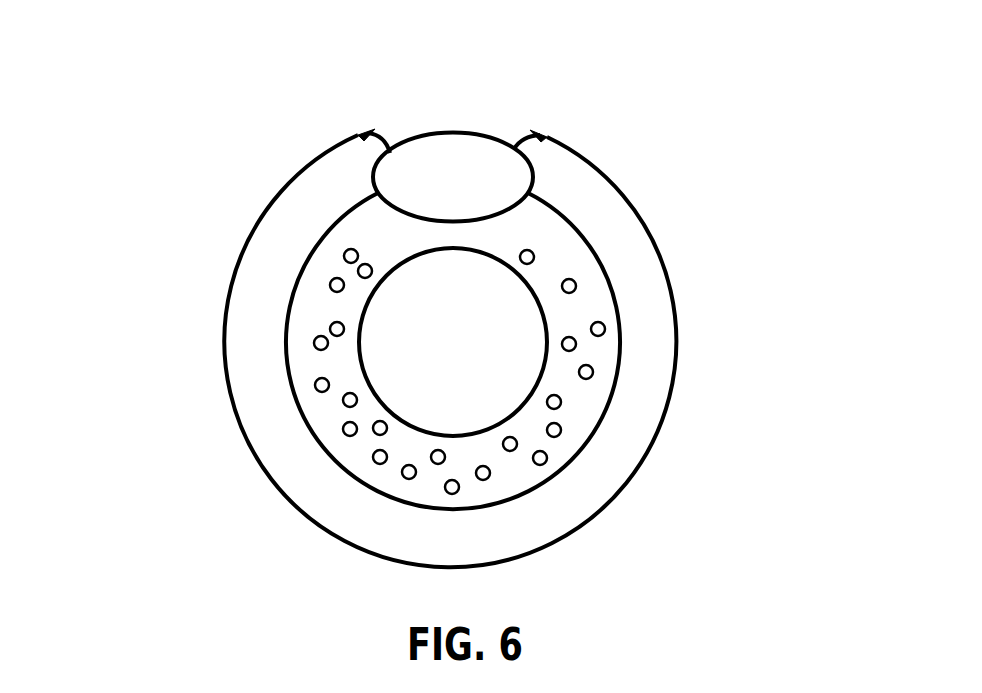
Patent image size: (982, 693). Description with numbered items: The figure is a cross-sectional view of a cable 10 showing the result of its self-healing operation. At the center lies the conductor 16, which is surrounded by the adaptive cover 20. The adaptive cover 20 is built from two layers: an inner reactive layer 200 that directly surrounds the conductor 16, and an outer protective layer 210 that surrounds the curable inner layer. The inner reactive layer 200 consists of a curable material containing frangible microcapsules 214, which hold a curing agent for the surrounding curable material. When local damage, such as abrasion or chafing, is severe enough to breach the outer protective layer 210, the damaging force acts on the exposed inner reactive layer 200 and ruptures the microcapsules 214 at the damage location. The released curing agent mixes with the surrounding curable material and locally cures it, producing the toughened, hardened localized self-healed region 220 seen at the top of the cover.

The cable 10 is at (225, 112).
The conductor 16 is at (460, 338).
The adaptive cover 20 is at (798, 122).
The inner reactive layer 200 is at (562, 267).
The outer protective layer 210 is at (577, 208).
The frangible microcapsules 214 is at (590, 377).
The localized self-healed region 220 is at (483, 133).